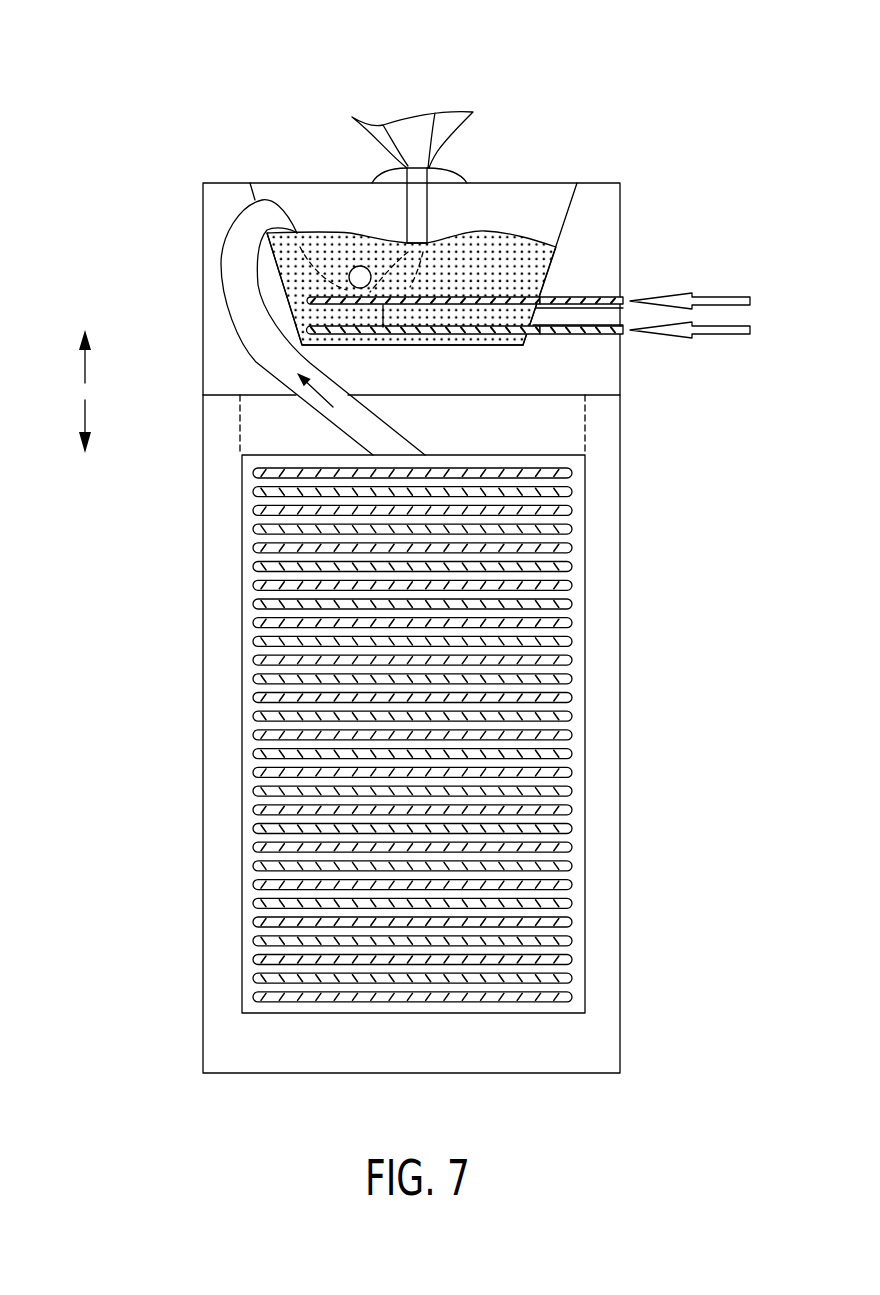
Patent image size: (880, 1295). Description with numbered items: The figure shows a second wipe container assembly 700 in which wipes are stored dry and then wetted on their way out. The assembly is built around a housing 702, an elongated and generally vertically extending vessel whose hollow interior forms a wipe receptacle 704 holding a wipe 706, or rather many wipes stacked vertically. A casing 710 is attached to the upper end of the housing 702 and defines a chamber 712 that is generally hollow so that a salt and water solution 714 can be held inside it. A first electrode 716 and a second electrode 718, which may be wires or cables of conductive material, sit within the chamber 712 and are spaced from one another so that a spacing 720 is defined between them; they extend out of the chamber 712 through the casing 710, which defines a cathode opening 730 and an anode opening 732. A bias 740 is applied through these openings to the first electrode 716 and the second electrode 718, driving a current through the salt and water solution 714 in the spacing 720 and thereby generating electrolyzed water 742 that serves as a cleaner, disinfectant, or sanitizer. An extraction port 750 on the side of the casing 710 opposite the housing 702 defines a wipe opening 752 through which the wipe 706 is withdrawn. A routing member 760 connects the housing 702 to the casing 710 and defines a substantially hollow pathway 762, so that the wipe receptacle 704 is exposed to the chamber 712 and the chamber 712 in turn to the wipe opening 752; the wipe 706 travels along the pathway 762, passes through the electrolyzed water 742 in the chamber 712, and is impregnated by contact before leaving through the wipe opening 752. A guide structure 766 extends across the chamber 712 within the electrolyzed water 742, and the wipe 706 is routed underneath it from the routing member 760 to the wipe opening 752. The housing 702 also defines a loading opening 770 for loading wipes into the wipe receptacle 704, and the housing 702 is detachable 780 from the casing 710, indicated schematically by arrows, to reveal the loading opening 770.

The second wipe container assembly 700 is at (97, 74).
The housing 702 is at (202, 587).
The wipe receptacle 704 is at (242, 785).
The wipe 706 is at (553, 1002).
The casing 710 is at (610, 183).
The chamber 712 is at (562, 207).
The salt and water solution 714 is at (483, 270).
The first electrode 716 is at (467, 303).
The second electrode 718 is at (495, 334).
The spacing 720 is at (383, 313).
The cathode opening 730 is at (590, 298).
The anode opening 732 is at (582, 334).
The bias 740 is at (752, 301).
The electrolyzed water 742 is at (543, 255).
The extraction port 750 is at (390, 170).
The wipe opening 752 is at (442, 169).
The routing member 760 is at (222, 276).
The pathway 762 is at (233, 240).
The guide structure 766 is at (357, 266).
The loading opening 770 is at (240, 417).
The detachable 780 is at (82, 413).